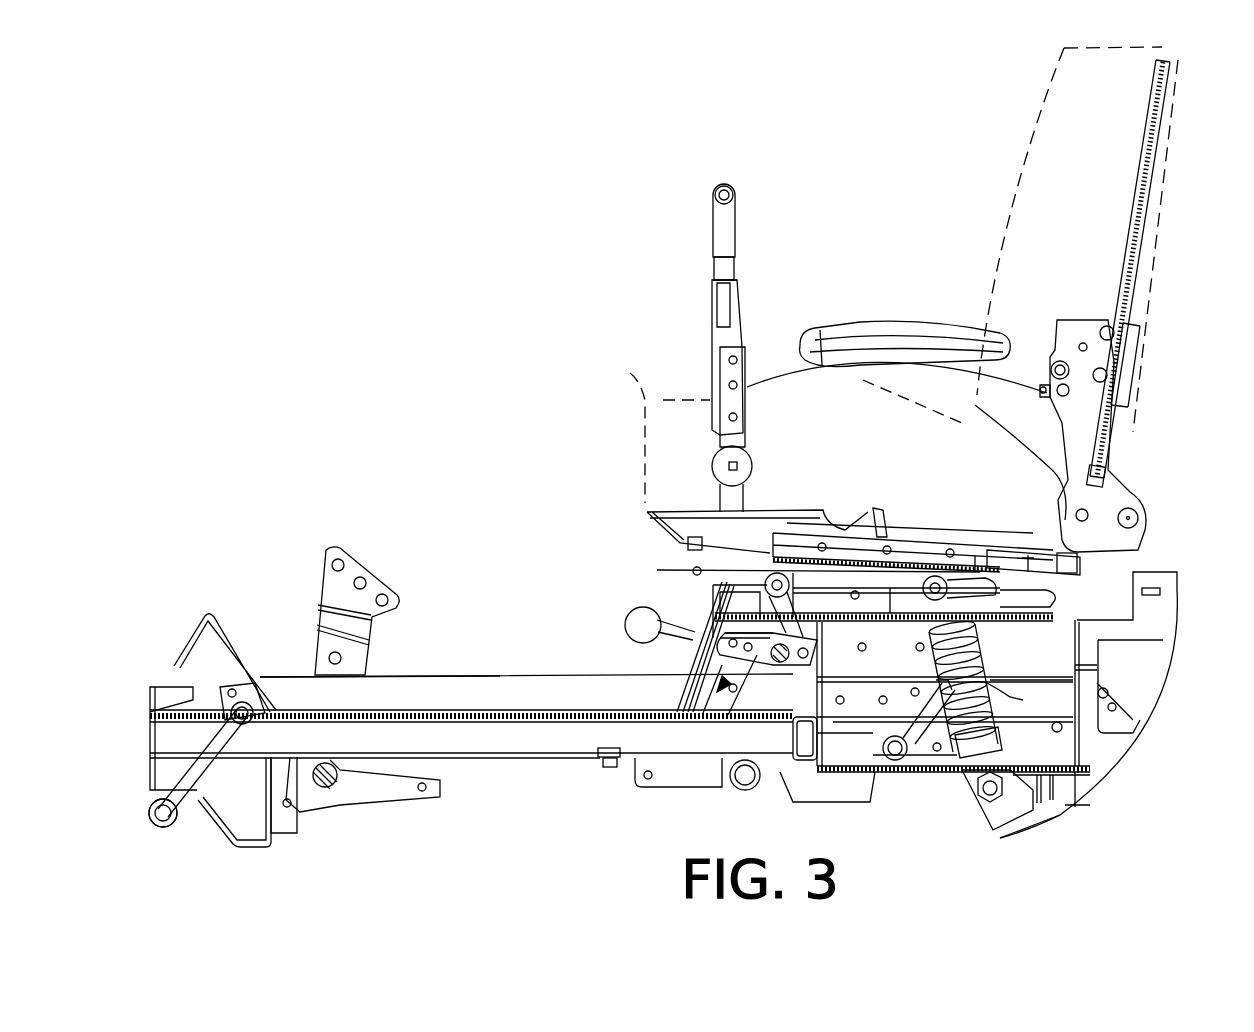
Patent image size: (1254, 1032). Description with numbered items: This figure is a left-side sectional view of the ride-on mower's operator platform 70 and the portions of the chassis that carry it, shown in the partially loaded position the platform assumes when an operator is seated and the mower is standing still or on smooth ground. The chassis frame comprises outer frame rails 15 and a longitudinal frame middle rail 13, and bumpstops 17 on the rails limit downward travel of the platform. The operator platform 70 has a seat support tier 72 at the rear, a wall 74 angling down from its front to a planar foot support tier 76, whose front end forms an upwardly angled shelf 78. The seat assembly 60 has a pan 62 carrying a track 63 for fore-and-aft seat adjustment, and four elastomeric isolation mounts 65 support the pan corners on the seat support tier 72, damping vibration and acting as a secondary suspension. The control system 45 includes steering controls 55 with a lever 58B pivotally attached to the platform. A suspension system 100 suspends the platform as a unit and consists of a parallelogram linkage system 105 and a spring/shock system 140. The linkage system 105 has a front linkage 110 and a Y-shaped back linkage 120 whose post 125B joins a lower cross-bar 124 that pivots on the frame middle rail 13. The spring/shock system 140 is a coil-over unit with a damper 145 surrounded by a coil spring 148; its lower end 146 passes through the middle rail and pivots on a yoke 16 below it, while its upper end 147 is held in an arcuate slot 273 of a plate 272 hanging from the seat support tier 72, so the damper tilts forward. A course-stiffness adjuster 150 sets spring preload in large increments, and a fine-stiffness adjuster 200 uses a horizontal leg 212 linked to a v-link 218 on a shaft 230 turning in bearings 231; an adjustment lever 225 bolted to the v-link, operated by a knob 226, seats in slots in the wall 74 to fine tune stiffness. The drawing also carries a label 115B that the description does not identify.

The frame middle rail 13 is at (760, 780).
The outer frame rails 15 is at (470, 755).
The yoke 16 is at (1013, 815).
The bumpstops 17 is at (600, 770).
The control system 45 is at (680, 375).
The steering controls 55 is at (736, 226).
The lever 58B is at (728, 337).
The seat assembly 60 is at (1010, 165).
The pan 62 is at (1090, 548).
The track 63 is at (768, 530).
The isolation mounts 65 is at (650, 512).
The operator platform 70 is at (505, 625).
The seat support tier 72 is at (1025, 620).
The wall 74 is at (753, 605).
The foot support tier 76 is at (417, 700).
The upwardly angled shelf 78 is at (240, 650).
The suspension system 100 is at (665, 665).
The linkage system 105 is at (205, 716).
The front linkage 110 is at (245, 855).
The pivot 115B is at (192, 830).
The back linkage 120 is at (905, 760).
The lower cross-bar 124 is at (855, 785).
The post 125B is at (775, 775).
The spring/shock system 140 is at (930, 673).
The damper 145 is at (1035, 772).
The lower end 146 is at (1073, 802).
The upper end 147 is at (933, 562).
The coil spring 148 is at (1002, 692).
The course-stiffness adjuster 150 is at (978, 830).
The fine-stiffness adjuster 200 is at (705, 720).
The horizontal leg 212 is at (843, 535).
The v-link 218 is at (845, 690).
The adjustment lever 225 is at (675, 695).
The knob 226 is at (625, 622).
The shaft 230 is at (815, 680).
The bearings 231 is at (808, 545).
The plate 272 is at (945, 540).
The arcuate slot 273 is at (1028, 556).